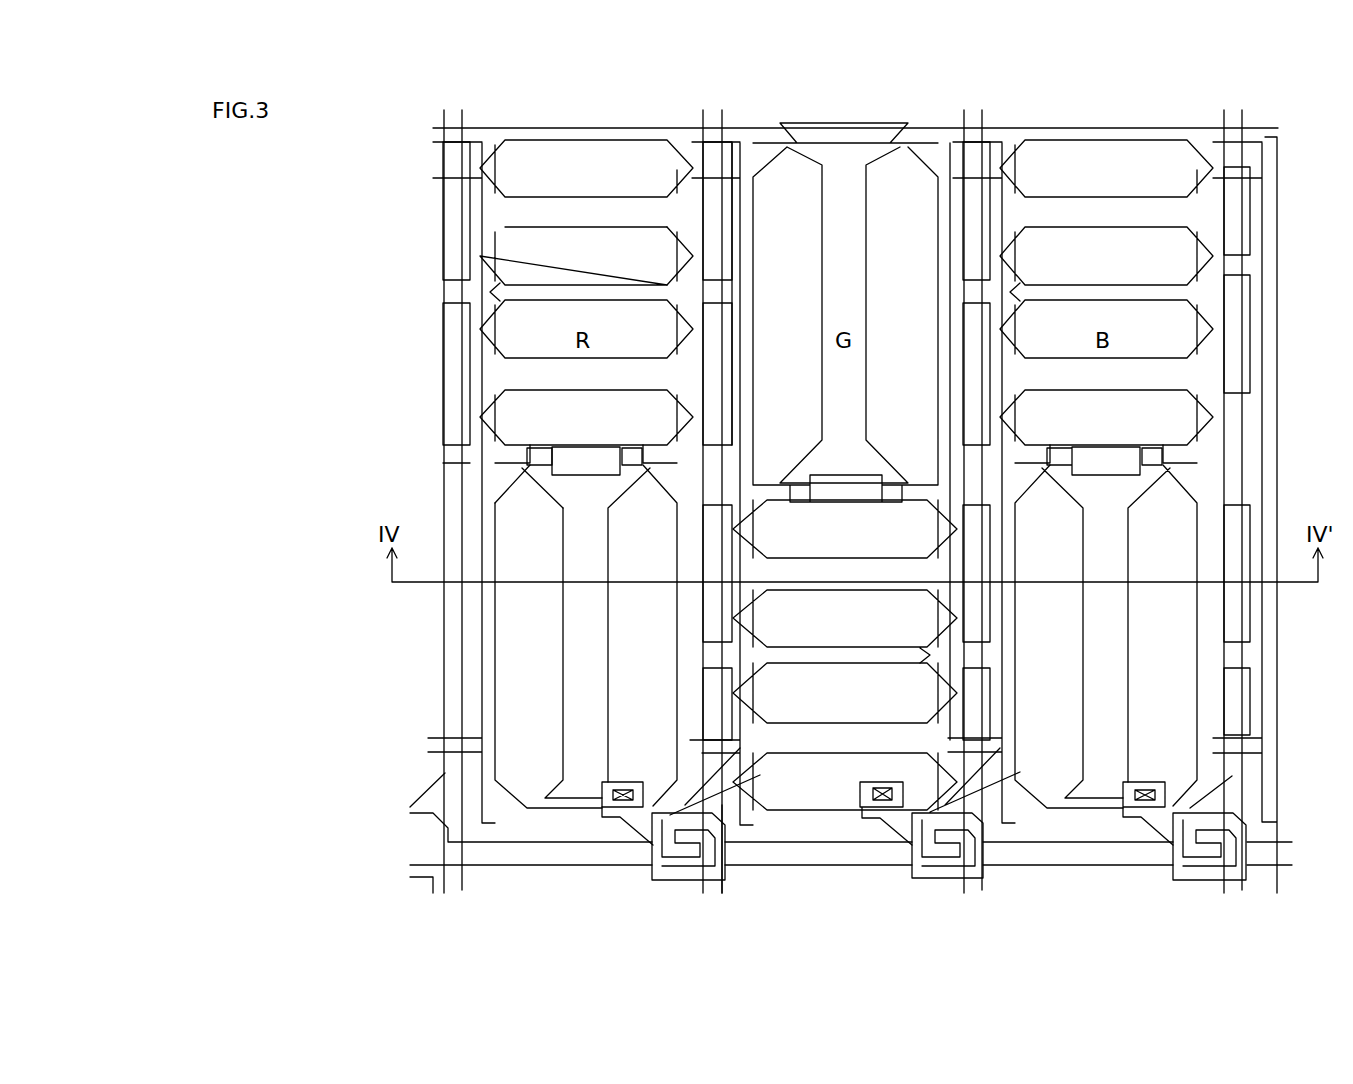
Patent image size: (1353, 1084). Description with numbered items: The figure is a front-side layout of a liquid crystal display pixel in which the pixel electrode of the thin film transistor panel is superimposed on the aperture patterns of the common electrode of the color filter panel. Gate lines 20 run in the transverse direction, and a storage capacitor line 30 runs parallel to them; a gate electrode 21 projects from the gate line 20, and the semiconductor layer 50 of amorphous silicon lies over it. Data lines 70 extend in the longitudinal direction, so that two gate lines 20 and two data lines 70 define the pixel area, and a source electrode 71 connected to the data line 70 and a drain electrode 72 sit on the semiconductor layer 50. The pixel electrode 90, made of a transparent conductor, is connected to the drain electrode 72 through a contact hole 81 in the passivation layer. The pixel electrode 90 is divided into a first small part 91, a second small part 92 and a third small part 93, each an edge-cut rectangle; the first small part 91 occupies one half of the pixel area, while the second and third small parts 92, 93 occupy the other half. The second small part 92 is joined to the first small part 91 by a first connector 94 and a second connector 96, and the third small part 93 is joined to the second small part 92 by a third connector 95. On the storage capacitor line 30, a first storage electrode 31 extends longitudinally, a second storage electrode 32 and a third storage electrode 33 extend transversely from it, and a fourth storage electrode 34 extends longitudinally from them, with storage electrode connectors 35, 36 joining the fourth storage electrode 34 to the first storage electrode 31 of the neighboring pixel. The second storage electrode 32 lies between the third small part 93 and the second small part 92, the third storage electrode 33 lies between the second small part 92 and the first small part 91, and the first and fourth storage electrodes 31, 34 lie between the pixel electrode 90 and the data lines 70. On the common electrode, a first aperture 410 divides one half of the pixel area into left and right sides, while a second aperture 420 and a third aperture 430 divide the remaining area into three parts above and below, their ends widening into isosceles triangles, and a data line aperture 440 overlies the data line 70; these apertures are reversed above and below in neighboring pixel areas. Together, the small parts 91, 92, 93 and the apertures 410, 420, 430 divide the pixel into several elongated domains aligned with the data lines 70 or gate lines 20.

The gate line 20 is at (500, 862).
The gate electrode 21 is at (718, 803).
The storage capacitor line 30 is at (568, 128).
The first storage electrode 31 is at (498, 441).
The second storage electrode 32 is at (571, 290).
The third storage electrode 33 is at (515, 467).
The fourth storage electrode 34 is at (675, 273).
The storage electrode connector 35 is at (715, 170).
The storage electrode connector 36 is at (713, 750).
The semiconductor layer 50 is at (657, 873).
The data line 70 is at (440, 208).
The source electrode 71 is at (695, 800).
The drain electrode 72 is at (643, 842).
The contact hole 81 is at (610, 783).
The pixel electrode 90 is at (441, 329).
The first small part 91 is at (471, 470).
The second small part 92 is at (495, 358).
The third small part 93 is at (465, 245).
The first connector 94 is at (548, 465).
The third connector 95 is at (492, 294).
The second connector 96 is at (627, 458).
The first aperture 410 is at (871, 416).
The second aperture 420 is at (836, 556).
The third aperture 430 is at (815, 723).
The data line aperture 440 is at (732, 213).